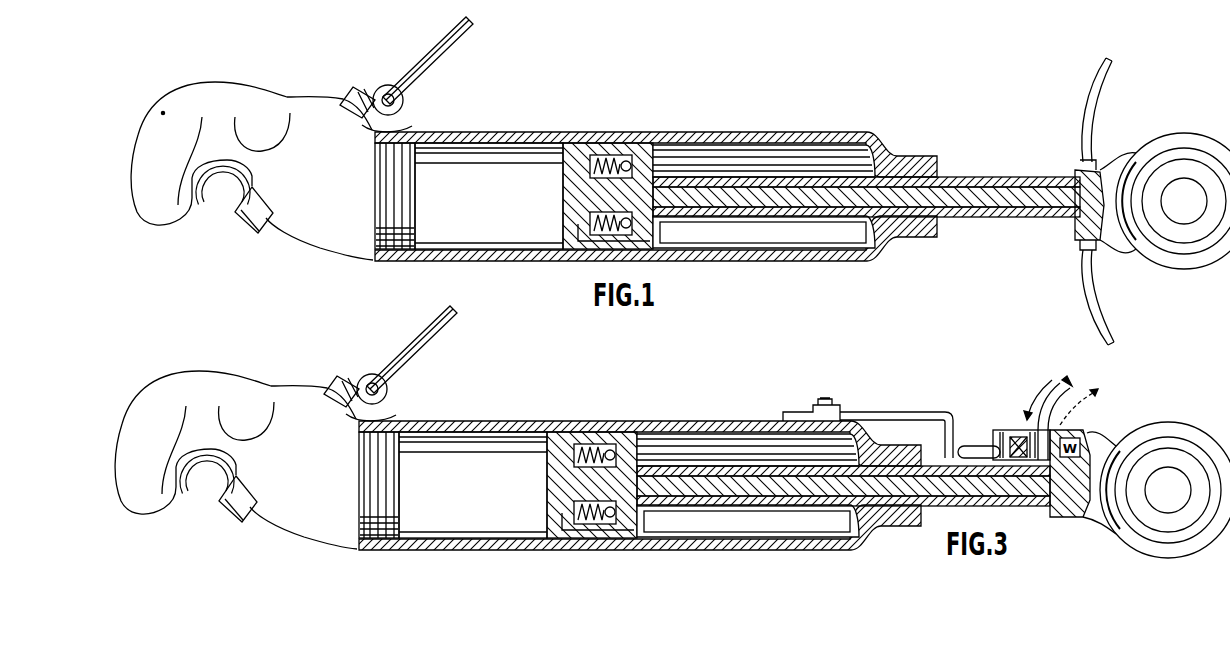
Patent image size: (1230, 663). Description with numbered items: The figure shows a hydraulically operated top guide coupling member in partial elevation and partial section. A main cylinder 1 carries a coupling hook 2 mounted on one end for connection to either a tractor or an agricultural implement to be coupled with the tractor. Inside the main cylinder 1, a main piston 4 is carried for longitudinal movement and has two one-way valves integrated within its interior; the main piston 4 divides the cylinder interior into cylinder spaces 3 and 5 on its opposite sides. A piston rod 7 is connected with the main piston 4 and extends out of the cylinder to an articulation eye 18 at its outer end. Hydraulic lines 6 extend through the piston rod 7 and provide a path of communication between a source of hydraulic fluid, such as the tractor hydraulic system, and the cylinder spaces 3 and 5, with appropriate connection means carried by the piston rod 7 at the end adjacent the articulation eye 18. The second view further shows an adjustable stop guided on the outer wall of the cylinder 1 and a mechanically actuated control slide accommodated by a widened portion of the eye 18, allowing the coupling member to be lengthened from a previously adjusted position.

The main cylinder 1 is at (527, 137).
The coupling hook 2 is at (262, 131).
The cylinder space 3 is at (470, 182).
The main piston 4 is at (581, 155).
The cylinder space 5 is at (757, 165).
The hydraulic lines 6 is at (841, 215).
The piston rod 7 is at (985, 178).
The articulation eye 18 is at (1212, 152).